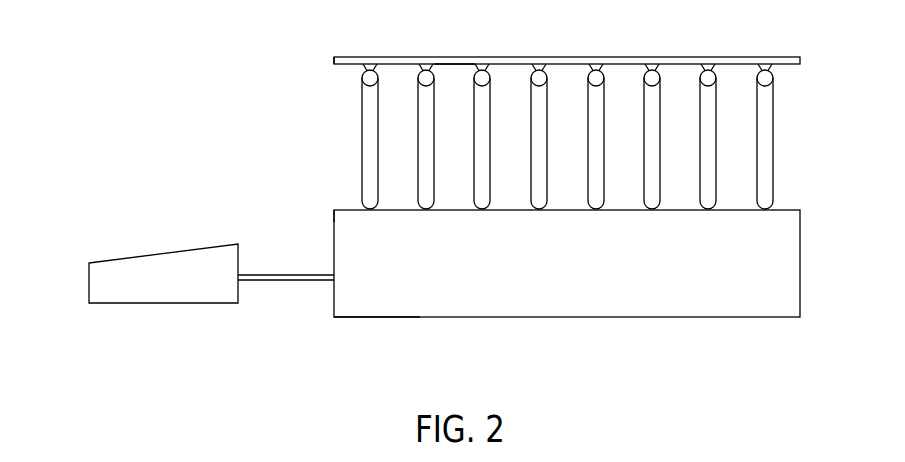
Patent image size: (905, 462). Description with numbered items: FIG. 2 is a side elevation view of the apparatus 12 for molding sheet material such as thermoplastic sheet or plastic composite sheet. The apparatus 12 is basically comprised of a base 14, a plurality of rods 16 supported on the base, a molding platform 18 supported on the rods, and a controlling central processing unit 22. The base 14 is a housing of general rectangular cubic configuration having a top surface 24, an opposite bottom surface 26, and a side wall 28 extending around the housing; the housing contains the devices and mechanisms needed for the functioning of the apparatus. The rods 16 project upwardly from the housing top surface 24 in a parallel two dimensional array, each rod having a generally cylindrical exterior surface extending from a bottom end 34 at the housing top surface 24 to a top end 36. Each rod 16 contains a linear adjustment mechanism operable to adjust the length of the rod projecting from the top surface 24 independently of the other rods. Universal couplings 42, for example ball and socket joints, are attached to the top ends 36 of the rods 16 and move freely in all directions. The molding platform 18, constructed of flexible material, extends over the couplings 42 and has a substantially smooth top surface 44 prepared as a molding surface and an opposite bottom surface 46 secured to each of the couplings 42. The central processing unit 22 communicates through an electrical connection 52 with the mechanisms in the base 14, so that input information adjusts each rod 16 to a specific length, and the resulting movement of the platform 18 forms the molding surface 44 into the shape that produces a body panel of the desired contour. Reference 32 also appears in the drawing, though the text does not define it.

The apparatus 12 is at (586, 185).
The base 14 is at (572, 268).
The rods 16 is at (782, 179).
The molding platform 18 is at (786, 46).
The central processing unit 22 is at (87, 279).
The top surface 24 is at (349, 210).
The bottom surface 26 is at (397, 318).
The side wall 28 is at (446, 294).
The pin shaft 32 is at (505, 166).
The bottom end 34 is at (490, 157).
The top end 36 is at (549, 111).
The universal couplings 42 is at (539, 78).
The top surface 44 is at (349, 57).
The bottom surface 46 is at (459, 67).
The electrical connection 52 is at (302, 285).